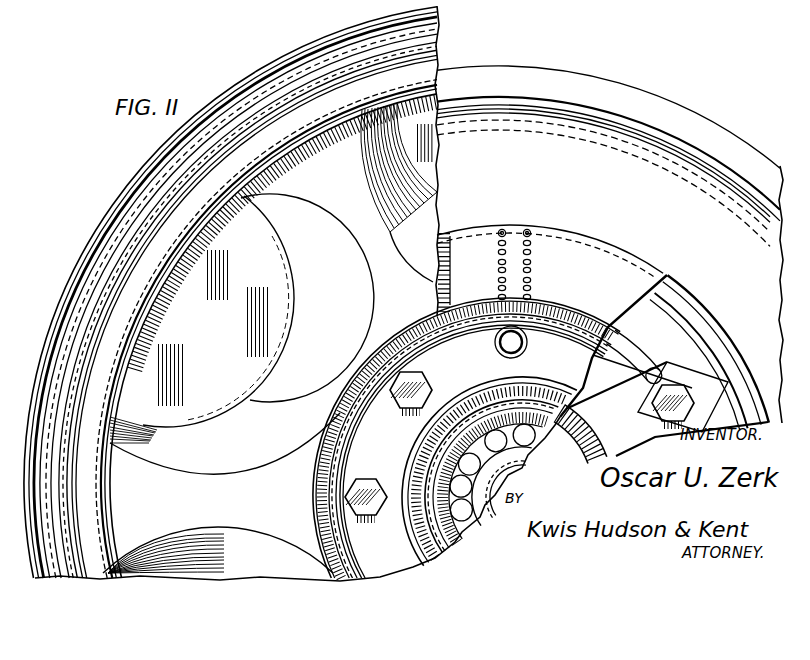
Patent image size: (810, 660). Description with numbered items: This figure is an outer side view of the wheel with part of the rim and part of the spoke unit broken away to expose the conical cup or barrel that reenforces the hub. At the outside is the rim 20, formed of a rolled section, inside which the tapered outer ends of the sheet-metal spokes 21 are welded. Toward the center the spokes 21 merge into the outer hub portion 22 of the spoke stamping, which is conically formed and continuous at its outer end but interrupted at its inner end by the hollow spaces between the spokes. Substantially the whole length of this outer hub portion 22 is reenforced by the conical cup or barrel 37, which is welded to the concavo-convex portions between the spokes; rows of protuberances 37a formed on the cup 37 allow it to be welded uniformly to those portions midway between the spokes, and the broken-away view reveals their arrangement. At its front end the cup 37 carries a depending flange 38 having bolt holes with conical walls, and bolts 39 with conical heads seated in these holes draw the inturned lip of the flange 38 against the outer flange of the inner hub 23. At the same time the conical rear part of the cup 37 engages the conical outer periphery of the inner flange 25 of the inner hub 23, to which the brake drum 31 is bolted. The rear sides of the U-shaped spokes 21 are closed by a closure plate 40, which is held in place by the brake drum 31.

The rim 20 is at (140, 210).
The spokes 21 is at (333, 215).
The outer hub portion 22 is at (298, 388).
The inner hub 23 is at (443, 542).
The inner flange 25 is at (697, 350).
The brake drum 31 is at (663, 170).
The conical cup or barrel 37 is at (623, 270).
The protuberances 37a is at (533, 242).
The depending flange 38 is at (489, 342).
The bolts 39 is at (403, 393).
The closure plate 40 is at (147, 358).